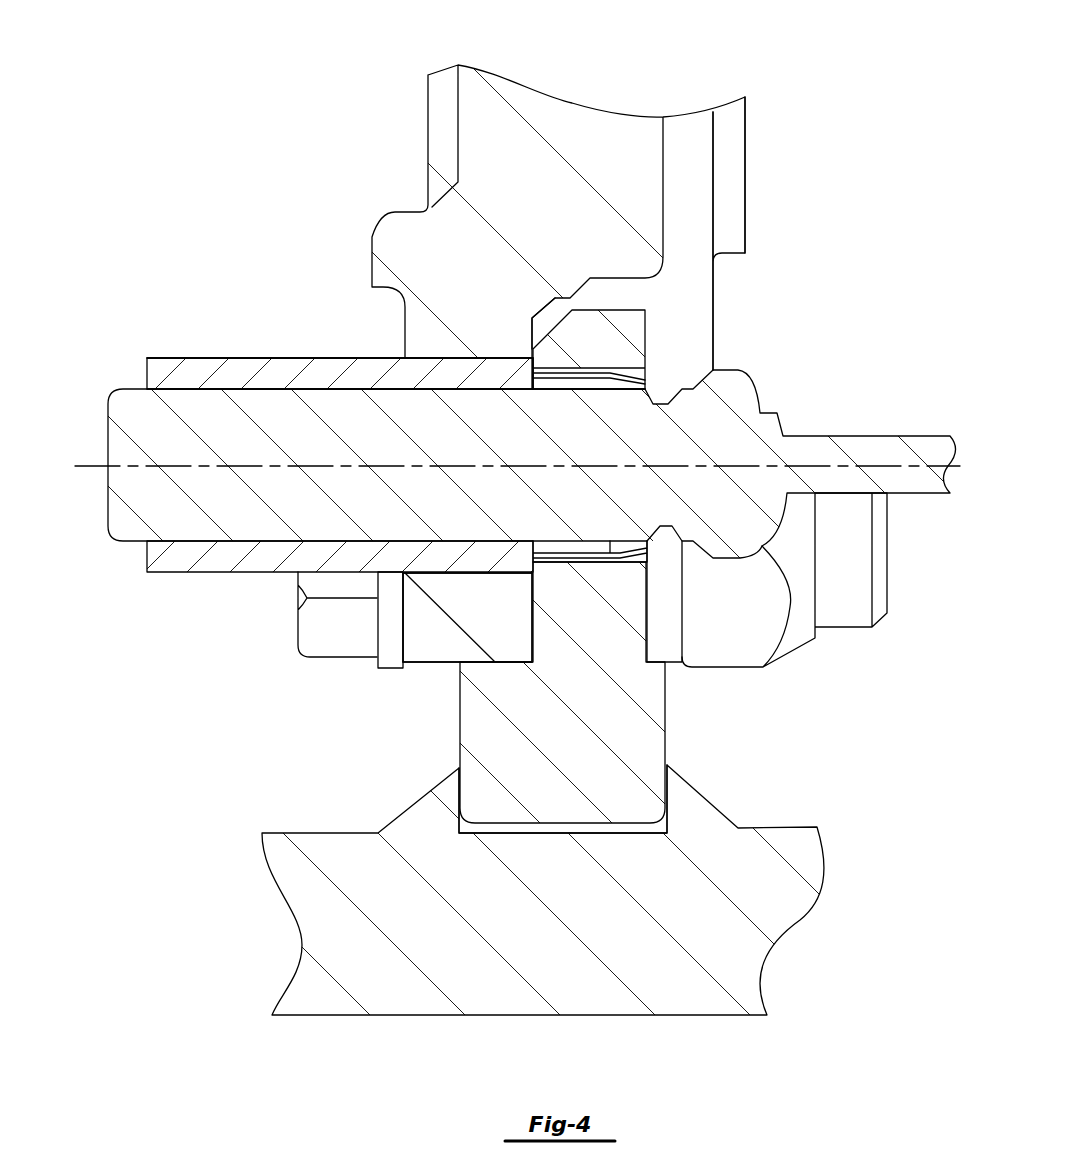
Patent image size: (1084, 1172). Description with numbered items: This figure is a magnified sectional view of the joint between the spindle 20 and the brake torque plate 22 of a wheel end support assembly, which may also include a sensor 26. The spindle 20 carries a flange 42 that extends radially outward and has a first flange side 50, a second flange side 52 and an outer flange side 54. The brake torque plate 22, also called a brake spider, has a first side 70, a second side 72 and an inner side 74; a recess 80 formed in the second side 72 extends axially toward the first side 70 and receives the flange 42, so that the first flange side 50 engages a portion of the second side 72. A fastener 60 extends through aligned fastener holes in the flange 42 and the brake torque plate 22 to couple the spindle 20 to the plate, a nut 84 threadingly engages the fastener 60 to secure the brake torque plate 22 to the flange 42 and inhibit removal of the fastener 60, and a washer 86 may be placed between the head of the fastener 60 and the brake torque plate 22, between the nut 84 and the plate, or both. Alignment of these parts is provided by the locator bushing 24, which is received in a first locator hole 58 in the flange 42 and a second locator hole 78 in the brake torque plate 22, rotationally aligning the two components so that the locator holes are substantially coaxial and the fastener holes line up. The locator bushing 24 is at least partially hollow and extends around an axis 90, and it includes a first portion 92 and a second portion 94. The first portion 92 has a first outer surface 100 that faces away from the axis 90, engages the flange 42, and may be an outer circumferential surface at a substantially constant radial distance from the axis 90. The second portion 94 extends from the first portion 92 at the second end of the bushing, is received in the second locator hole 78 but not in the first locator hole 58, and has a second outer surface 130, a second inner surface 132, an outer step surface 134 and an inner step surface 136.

The spindle 20 is at (310, 833).
The brake torque plate 22 is at (572, 100).
The locator bushing 24 is at (208, 356).
The sensor 26 is at (108, 438).
The flange 42 is at (560, 738).
The first flange side 50 is at (532, 622).
The second flange side 52 is at (667, 745).
The outer flange side 54 is at (626, 310).
The first locator hole 58 is at (593, 562).
The fastener 60 is at (348, 657).
The first side 70 is at (403, 608).
The second side 72 is at (533, 628).
The inner side 74 is at (432, 662).
The second locator hole 78 is at (462, 572).
The recess 80 is at (683, 348).
The nut 84 is at (733, 621).
The washer 86 is at (390, 668).
The axis 90 is at (90, 466).
The first portion 92 is at (570, 368).
The second portion 94 is at (281, 358).
The first outer surface 100 is at (612, 368).
The second outer surface 130 is at (330, 358).
The second inner surface 132 is at (263, 390).
The outer step surface 134 is at (545, 347).
The inner step surface 136 is at (540, 383).